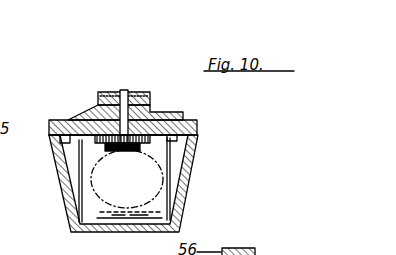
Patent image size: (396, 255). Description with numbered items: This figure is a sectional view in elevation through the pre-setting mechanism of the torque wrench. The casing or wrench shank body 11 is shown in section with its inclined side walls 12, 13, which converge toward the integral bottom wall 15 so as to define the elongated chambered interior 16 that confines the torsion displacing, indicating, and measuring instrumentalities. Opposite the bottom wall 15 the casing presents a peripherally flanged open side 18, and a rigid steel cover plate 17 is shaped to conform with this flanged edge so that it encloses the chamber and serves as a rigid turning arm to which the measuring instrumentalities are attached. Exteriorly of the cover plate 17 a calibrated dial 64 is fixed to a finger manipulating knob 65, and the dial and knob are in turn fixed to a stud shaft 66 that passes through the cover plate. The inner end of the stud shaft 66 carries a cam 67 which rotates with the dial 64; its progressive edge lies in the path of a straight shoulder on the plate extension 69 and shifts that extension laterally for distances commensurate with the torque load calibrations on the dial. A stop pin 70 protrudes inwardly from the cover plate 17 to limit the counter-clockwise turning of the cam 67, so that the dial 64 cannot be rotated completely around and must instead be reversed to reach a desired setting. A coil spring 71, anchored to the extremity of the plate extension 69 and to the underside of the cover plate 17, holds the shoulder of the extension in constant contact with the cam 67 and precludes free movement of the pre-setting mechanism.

The wrench shank or body 11 is at (188, 209).
The inclined side wall 12 is at (68, 202).
The inclined side wall 13 is at (185, 201).
The bottom wall 15 is at (147, 234).
The chambered interior 16 is at (100, 216).
The cover plate 17 is at (200, 120).
The peripherally flanged open side 18 is at (53, 142).
The calibrated dial 64 is at (87, 112).
The finger manipulating knob 65 is at (100, 90).
The stud shaft 66 is at (126, 90).
The cam 67 is at (100, 141).
The plate extension 69 is at (173, 145).
The pin 70 is at (143, 152).
The coil spring 71 is at (124, 151).